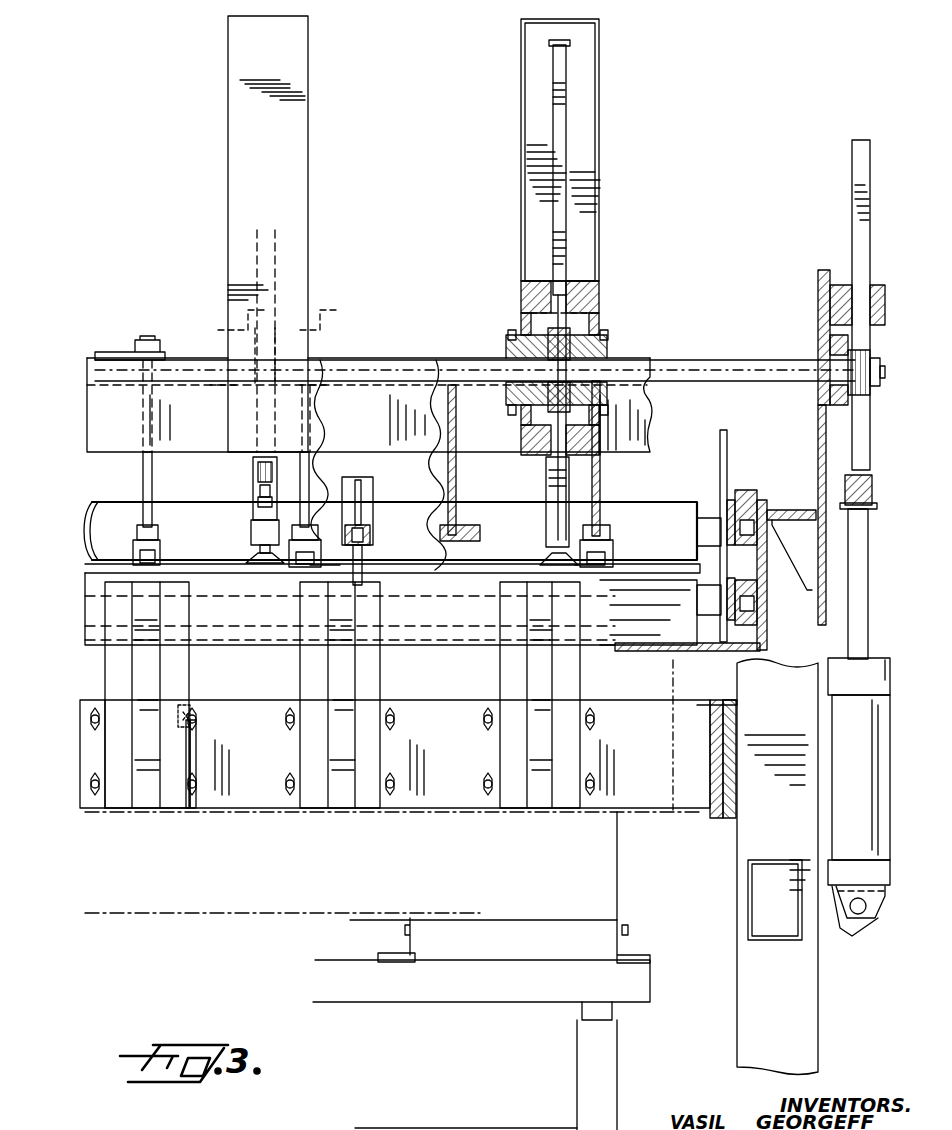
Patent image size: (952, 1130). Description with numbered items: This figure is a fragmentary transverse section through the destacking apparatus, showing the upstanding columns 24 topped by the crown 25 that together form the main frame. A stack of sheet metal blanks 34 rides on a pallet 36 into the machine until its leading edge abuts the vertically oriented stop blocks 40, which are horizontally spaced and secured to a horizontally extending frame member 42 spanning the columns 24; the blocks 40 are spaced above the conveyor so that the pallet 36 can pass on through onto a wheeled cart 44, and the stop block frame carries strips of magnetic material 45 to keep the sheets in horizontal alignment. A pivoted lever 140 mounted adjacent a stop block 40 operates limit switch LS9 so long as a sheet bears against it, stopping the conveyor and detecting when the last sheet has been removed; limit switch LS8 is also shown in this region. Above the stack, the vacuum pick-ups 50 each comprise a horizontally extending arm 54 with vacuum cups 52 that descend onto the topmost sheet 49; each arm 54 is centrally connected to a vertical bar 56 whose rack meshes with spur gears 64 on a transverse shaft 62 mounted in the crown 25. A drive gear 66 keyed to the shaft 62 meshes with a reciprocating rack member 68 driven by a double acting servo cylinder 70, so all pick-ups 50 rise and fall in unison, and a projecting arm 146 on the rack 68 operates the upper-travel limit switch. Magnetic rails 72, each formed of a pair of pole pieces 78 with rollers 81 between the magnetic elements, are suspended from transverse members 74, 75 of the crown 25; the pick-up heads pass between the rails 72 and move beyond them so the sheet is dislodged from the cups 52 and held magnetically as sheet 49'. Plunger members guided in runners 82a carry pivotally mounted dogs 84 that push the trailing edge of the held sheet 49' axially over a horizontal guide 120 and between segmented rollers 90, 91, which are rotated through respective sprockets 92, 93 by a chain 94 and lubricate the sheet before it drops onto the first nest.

The column 24 is at (800, 1031).
The crown 25 is at (618, 242).
The stack of sheet metal blanks 34 is at (678, 688).
The pallet 36 is at (615, 898).
The stop block 40 is at (366, 703).
The frame member 42 is at (695, 808).
The wheeled cart 44 is at (600, 940).
The strip of magnetic material 45 is at (140, 803).
The topmost sheet 49 is at (350, 609).
The magnetically held sheet 49' is at (211, 555).
The vacuum pick-up 50 is at (252, 512).
The vacuum cup 52 is at (267, 565).
The horizontally extending arm 54 is at (255, 532).
The vertical bar 56 is at (553, 218).
The transverse shaft 62 is at (137, 353).
The spur gear 64 is at (568, 335).
The drive gear 66 is at (868, 353).
The reciprocating rack member 68 is at (862, 250).
The double acting servo cylinder 70 is at (867, 785).
The magnetic rail 72 is at (152, 528).
The transverse member 74 is at (370, 390).
The transverse member 75 is at (627, 445).
The pole piece 78 is at (483, 560).
The roller 81 is at (140, 555).
The runner 82a is at (371, 550).
The dog 84 is at (362, 565).
The segmented roller 90 is at (120, 506).
The segmented roller 91 is at (698, 643).
The sprocket 92 is at (718, 538).
The sprocket 93 is at (736, 635).
The chain 94 is at (727, 450).
The horizontal guide 120 is at (205, 568).
The pivoted lever 140 is at (197, 767).
The projecting arm 146 is at (868, 507).
The limit switch LS8 is at (470, 555).
The limit switch LS9 is at (188, 705).